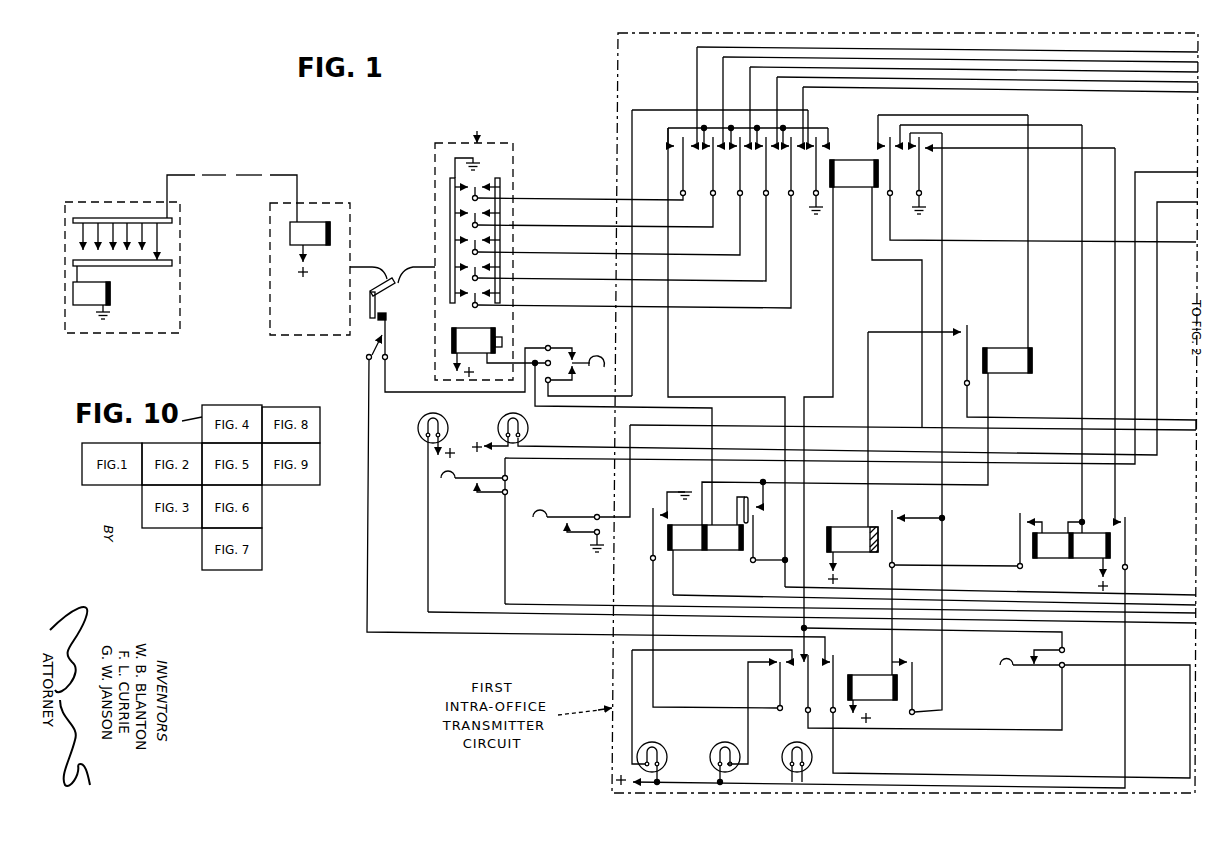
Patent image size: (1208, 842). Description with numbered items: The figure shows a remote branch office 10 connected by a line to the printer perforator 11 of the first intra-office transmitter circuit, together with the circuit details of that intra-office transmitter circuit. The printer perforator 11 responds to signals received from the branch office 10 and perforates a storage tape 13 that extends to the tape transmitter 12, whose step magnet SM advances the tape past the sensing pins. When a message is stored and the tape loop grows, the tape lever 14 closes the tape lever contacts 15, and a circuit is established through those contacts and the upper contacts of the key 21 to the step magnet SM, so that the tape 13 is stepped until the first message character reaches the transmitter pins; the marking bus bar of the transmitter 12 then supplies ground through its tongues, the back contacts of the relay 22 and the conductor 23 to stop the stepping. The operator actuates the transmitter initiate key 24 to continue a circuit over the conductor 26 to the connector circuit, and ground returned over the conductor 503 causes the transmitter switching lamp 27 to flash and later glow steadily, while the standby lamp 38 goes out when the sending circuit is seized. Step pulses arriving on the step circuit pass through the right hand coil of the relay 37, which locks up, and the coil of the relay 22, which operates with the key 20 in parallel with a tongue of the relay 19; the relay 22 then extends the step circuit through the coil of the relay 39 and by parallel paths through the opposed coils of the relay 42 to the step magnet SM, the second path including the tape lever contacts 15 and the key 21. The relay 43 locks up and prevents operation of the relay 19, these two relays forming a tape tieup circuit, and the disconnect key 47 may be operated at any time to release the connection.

The remote branch office 10 is at (181, 283).
The printer perforator 11 is at (316, 203).
The tape transmitter 12 is at (514, 163).
The storage tape 13 is at (381, 267).
The tape lever 14 is at (388, 289).
The tape lever contacts 15 is at (366, 350).
The relay 19 is at (868, 675).
The key 20 is at (1022, 667).
The key 21 is at (590, 358).
The relay 22 is at (859, 161).
The conductor 23 is at (1167, 596).
The transmitter initiate key 24 is at (470, 480).
The conductor 26 is at (1176, 173).
The transmitter switching lamp 27 is at (497, 417).
The relay 37 is at (1067, 558).
The standby lamp 38 is at (419, 417).
The relay 39 is at (1015, 373).
The relay 42 is at (711, 551).
The relay 43 is at (845, 533).
The disconnect key 47 is at (560, 526).
The conductor 503 is at (1185, 203).